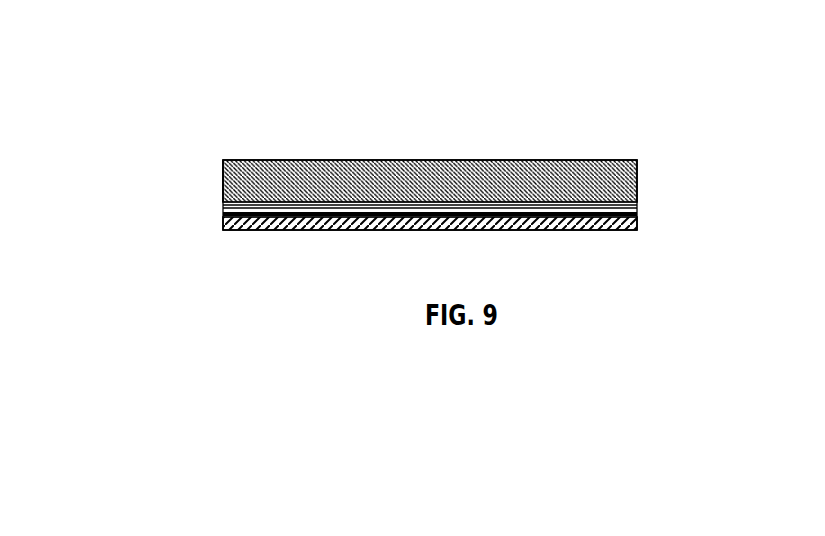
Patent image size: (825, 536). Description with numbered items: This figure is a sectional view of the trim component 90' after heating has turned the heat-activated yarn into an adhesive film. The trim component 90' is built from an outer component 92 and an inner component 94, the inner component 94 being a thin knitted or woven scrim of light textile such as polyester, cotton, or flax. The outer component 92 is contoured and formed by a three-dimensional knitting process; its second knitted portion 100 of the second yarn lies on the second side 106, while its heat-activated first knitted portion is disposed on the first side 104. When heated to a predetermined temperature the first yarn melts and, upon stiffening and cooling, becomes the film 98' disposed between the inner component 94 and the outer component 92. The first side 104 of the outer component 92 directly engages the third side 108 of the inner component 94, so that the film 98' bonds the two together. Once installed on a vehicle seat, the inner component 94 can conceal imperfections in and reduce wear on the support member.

The trim component 90' is at (395, 127).
The outer component 92 is at (223, 189).
The inner component 94 is at (223, 222).
The film 98' is at (495, 170).
The second knitted portion 100 is at (637, 168).
The first side 104 is at (418, 223).
The second side 106 is at (440, 160).
The third side 108 is at (558, 210).